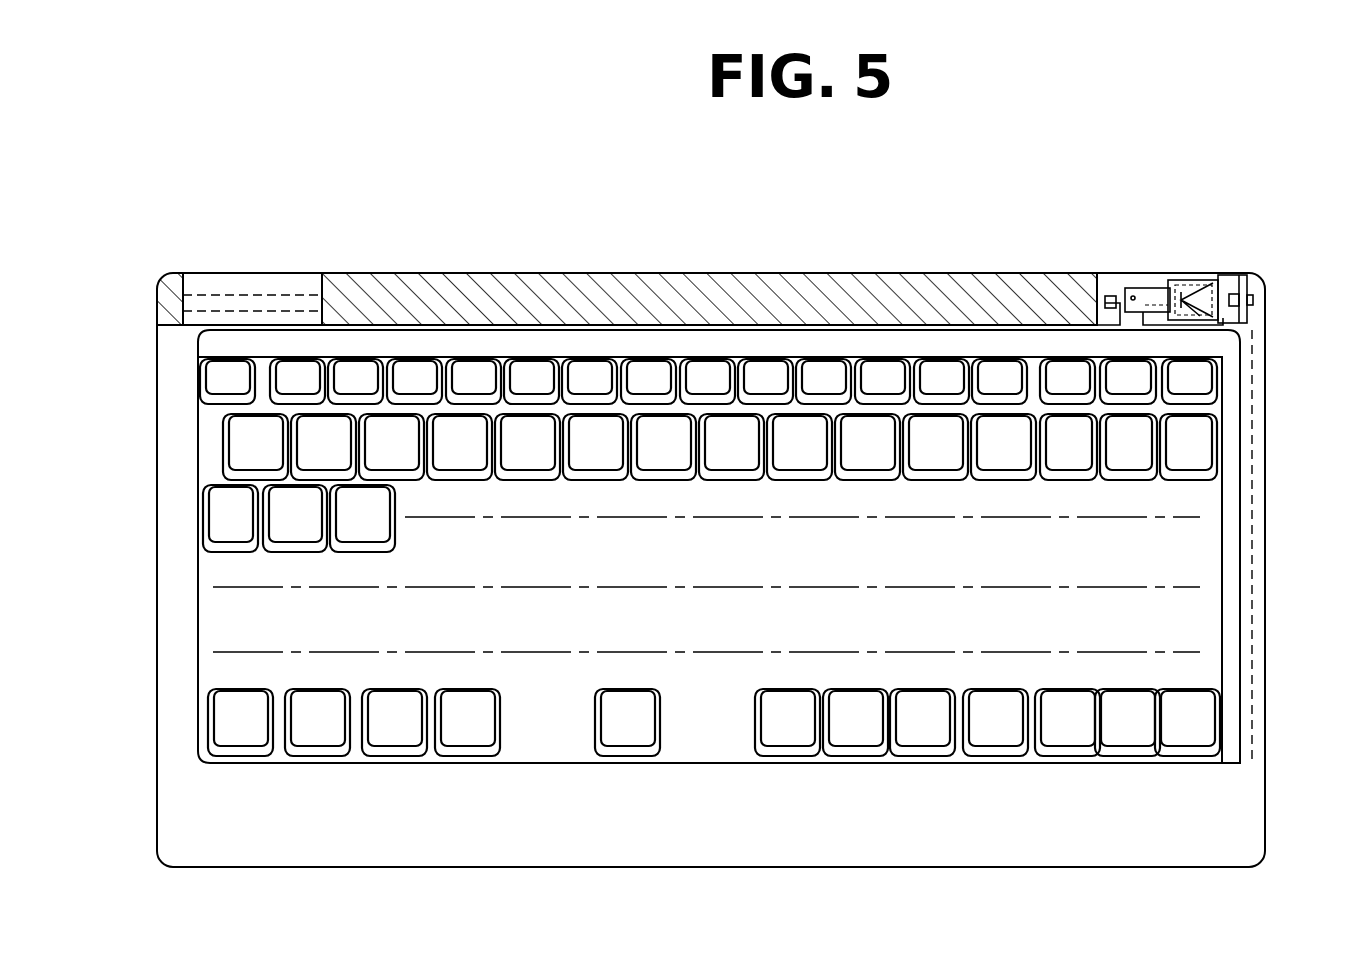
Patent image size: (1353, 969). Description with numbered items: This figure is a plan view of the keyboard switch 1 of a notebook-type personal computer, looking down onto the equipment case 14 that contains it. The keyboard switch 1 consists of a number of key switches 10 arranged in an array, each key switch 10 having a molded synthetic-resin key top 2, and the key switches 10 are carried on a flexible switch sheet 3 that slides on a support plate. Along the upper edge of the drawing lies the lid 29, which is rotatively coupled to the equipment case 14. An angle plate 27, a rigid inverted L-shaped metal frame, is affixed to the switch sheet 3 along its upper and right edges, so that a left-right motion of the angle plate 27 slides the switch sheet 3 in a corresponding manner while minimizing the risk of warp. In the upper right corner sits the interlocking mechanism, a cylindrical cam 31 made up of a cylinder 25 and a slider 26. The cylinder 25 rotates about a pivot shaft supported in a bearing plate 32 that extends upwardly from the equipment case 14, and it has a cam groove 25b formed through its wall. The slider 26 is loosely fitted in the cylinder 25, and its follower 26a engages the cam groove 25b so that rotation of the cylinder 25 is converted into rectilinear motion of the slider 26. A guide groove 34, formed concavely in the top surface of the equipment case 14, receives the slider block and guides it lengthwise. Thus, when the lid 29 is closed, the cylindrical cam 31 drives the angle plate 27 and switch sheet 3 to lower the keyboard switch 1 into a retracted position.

The keyboard switch 1 is at (1193, 546).
The key top 2 is at (472, 377).
The switch sheet 3 is at (215, 427).
The key switch 10 is at (591, 370).
The equipment case 14 is at (1023, 828).
The cylinder 25 is at (1192, 298).
The cam groove 25b is at (1230, 326).
The slider 26 is at (1158, 300).
The follower 26a is at (1223, 292).
The angle plate 27 is at (1230, 395).
The lid 29 is at (776, 300).
The cylindrical cam 31 is at (1175, 262).
The bearing plate 32 is at (1244, 300).
The guide groove 34 is at (1110, 297).